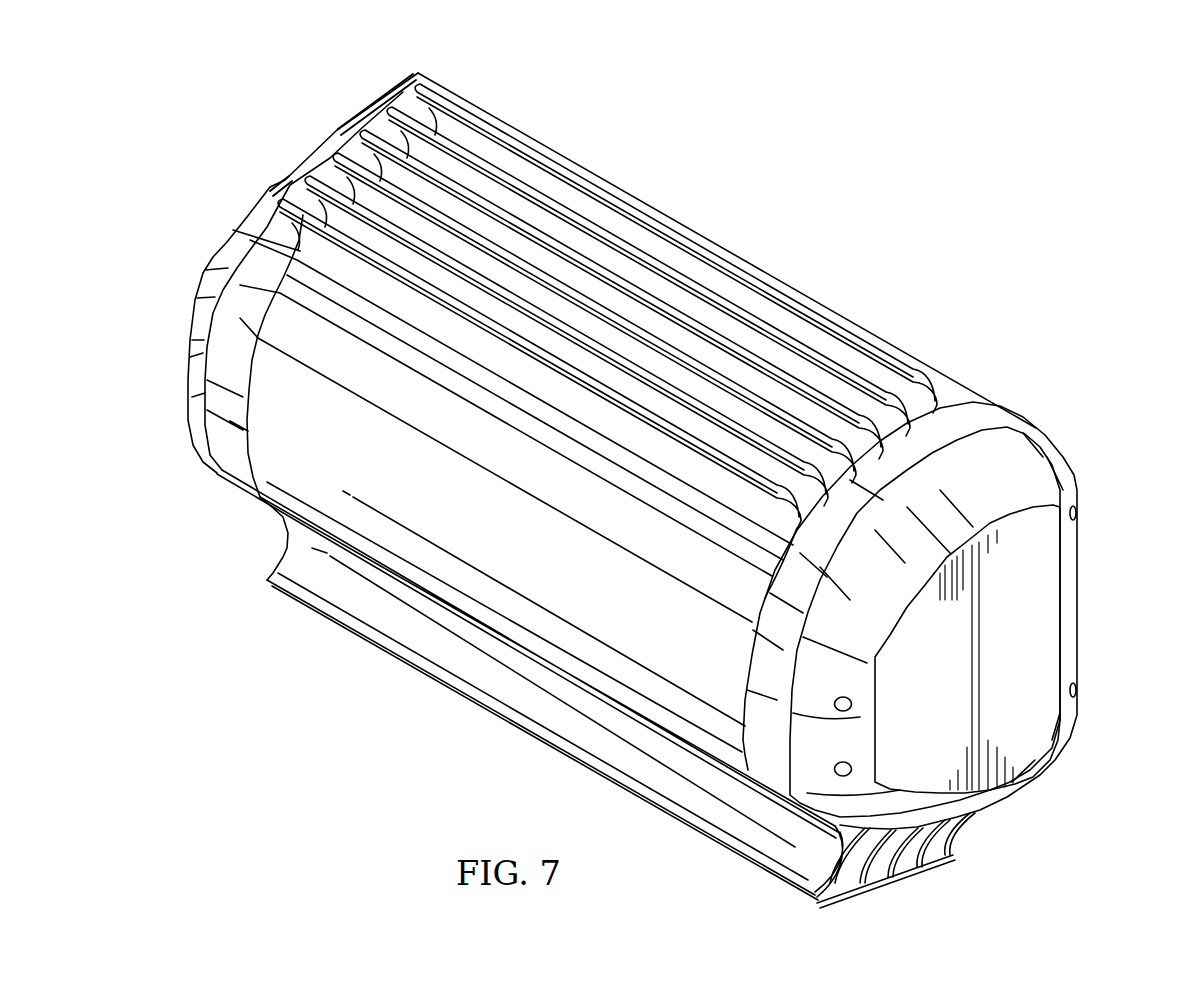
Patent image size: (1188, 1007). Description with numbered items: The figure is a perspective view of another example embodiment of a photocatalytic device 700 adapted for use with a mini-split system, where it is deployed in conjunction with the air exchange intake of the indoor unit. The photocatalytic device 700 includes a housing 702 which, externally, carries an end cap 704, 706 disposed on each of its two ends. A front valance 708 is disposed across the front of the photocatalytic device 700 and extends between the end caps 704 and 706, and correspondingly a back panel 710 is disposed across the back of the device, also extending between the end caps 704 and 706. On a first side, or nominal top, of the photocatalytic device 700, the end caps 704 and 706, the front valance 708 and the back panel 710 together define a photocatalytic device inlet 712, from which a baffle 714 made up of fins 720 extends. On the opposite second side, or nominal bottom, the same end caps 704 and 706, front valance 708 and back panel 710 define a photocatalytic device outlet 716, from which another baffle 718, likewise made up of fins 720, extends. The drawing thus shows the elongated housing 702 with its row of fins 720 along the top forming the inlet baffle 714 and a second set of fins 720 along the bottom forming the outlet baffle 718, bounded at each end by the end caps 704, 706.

The photocatalytic device 700 is at (903, 248).
The housing 702 is at (218, 510).
The end cap 704 is at (1050, 660).
The end cap 706 is at (218, 248).
The front valance 708 is at (265, 463).
The back panel 710 is at (918, 367).
The photocatalytic device inlet 712 is at (313, 207).
The baffle 714 is at (384, 94).
The photocatalytic device outlet 716 is at (458, 722).
The baffle 718 is at (929, 872).
The fins 720 is at (592, 413).